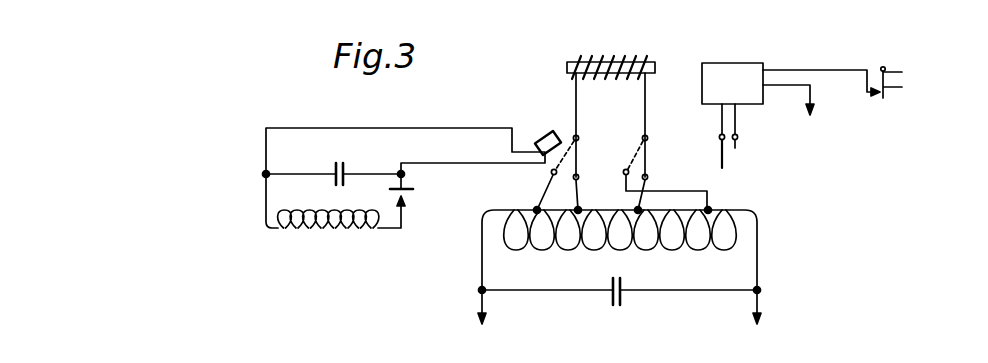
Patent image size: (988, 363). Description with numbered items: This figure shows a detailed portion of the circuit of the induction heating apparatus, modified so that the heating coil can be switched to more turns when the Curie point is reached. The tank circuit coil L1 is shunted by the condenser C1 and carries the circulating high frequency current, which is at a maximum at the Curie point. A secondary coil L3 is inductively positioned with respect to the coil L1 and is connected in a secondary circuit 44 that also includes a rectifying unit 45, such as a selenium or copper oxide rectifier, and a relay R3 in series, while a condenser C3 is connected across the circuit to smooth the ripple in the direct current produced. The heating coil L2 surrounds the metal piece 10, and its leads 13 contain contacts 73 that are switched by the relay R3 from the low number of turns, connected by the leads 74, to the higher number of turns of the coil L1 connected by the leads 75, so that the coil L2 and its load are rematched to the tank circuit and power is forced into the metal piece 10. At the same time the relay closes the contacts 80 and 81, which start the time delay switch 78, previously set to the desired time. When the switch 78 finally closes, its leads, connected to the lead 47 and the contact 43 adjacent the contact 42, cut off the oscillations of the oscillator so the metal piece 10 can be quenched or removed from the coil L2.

The metal piece 10 is at (626, 56).
The leads 13 is at (576, 97).
The contact 42 is at (907, 83).
The contact 43 is at (866, 86).
The secondary circuit 44 is at (362, 146).
The rectifying unit 45 is at (413, 190).
The lead 47 is at (811, 100).
The contacts 73 is at (578, 157).
The leads 74 is at (580, 196).
The leads 75 is at (544, 196).
The time delay switch 78 is at (750, 63).
The contact 80 is at (721, 142).
The contact 81 is at (733, 155).
The coil L1 is at (758, 226).
The heating coil L2 is at (668, 50).
The secondary coil L3 is at (306, 222).
The capacitor C1 is at (619, 306).
The condenser C3 is at (334, 169).
The relay R3 is at (549, 131).